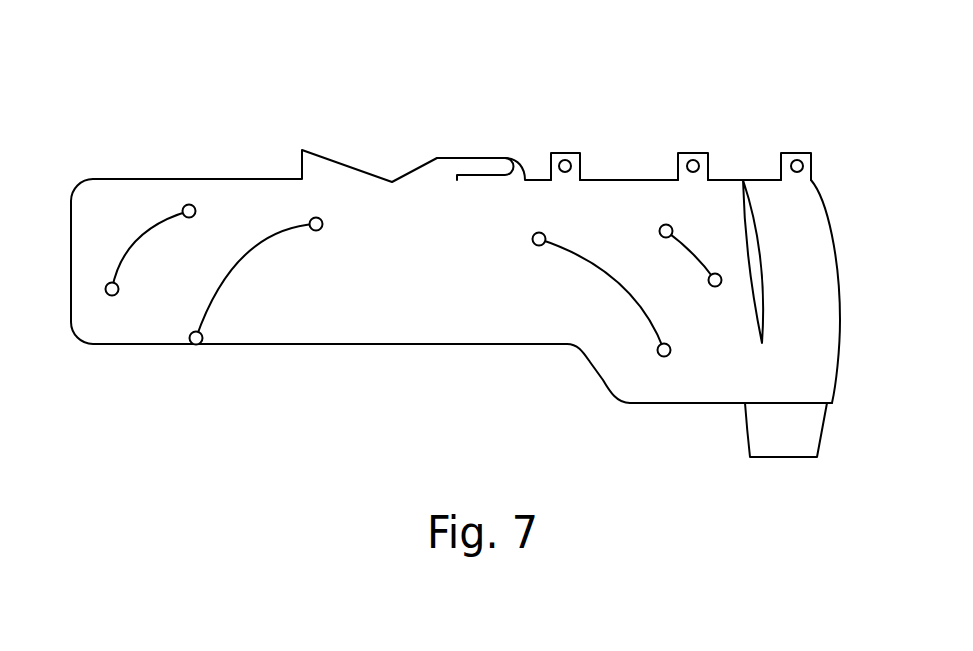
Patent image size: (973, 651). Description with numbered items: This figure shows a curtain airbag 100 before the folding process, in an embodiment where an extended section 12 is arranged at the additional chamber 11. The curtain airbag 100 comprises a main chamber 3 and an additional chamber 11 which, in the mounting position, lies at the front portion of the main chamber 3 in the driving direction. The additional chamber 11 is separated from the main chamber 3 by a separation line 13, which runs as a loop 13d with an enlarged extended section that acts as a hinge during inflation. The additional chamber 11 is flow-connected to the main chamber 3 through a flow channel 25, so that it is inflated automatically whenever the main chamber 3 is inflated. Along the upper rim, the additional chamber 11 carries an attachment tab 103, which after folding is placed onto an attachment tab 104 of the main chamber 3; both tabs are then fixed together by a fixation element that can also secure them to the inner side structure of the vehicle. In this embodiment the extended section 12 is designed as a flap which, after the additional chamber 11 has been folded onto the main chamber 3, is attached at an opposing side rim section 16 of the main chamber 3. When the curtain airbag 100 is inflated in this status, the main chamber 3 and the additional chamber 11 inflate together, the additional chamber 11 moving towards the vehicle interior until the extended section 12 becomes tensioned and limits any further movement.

The curtain airbag 100 is at (343, 117).
The main chamber 3 is at (545, 190).
The attachment tab of the main chamber 104 is at (687, 157).
The attachment tab of the additional chamber 103 is at (807, 157).
The loop 13d is at (744, 222).
The separation line 13 is at (762, 235).
The additional chamber 11 is at (817, 270).
The flow channel 25 is at (768, 353).
The opposing side rim section 16 is at (663, 392).
The extended section 12 is at (780, 442).